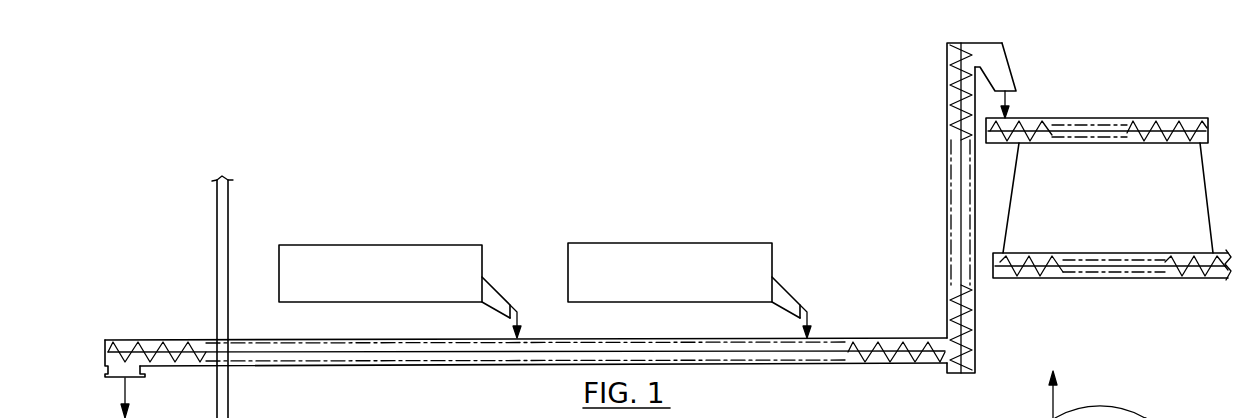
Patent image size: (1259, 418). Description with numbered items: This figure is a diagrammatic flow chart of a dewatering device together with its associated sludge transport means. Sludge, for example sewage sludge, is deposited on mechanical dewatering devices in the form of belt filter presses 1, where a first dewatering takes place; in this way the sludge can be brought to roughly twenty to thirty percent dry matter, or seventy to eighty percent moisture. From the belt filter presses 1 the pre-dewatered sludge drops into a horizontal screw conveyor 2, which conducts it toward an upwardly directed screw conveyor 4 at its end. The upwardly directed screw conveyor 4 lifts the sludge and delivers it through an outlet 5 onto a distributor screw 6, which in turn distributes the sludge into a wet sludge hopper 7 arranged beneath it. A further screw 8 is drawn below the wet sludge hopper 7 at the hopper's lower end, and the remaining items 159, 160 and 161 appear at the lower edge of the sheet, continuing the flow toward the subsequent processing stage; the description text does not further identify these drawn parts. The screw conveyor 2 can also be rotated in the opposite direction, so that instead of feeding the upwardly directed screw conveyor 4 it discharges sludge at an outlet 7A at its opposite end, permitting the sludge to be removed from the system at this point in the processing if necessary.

The belt filter press 1 is at (386, 270).
The screw conveyor 2 is at (375, 368).
The upwardly directed screw conveyor 4 is at (965, 315).
The outlet 5 is at (997, 72).
The distributor screw 6 is at (1075, 128).
The wet sludge hopper 7 is at (1161, 173).
The outlet 7A is at (120, 371).
The lower screw conveyor 8 is at (1092, 273).
The mixing drum 159 is at (1011, 411).
The mixing drum housing 160 is at (966, 412).
The feed line 161 is at (1051, 397).